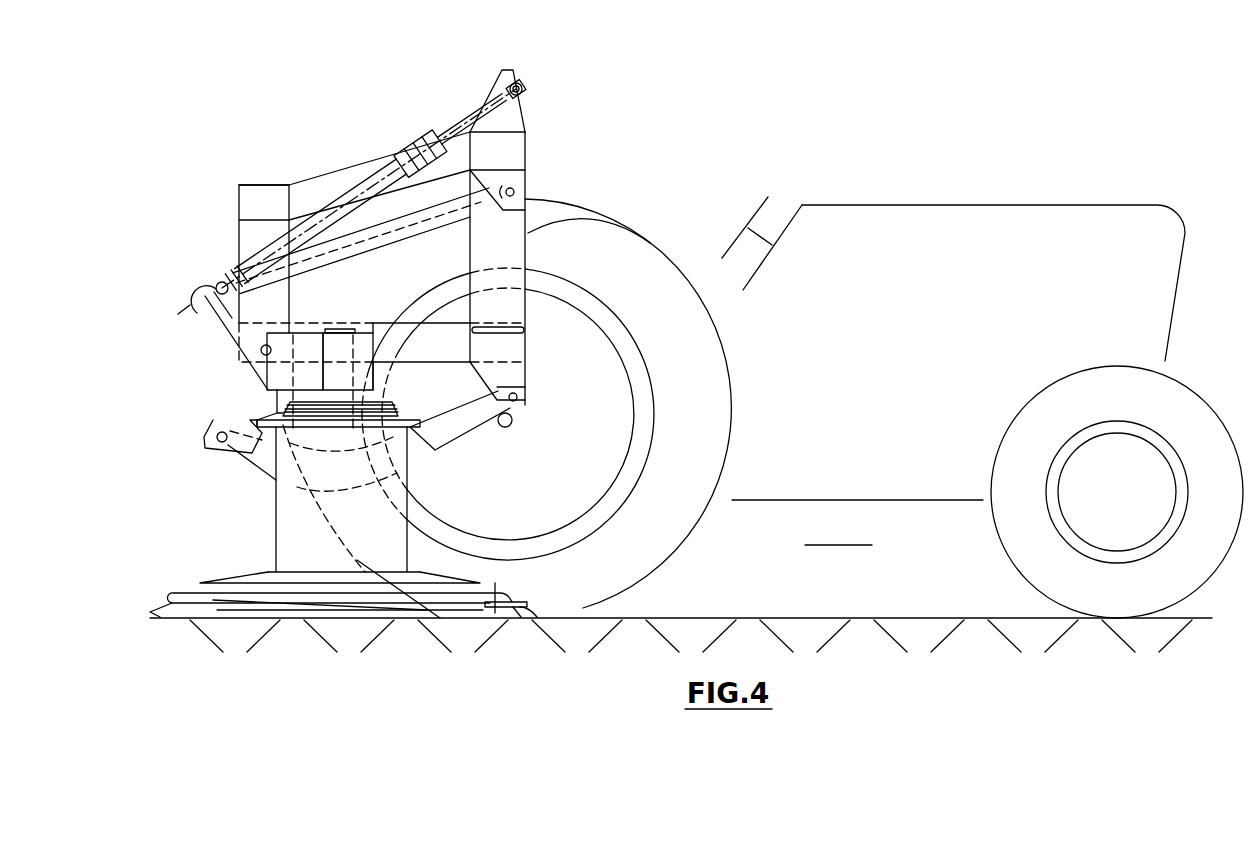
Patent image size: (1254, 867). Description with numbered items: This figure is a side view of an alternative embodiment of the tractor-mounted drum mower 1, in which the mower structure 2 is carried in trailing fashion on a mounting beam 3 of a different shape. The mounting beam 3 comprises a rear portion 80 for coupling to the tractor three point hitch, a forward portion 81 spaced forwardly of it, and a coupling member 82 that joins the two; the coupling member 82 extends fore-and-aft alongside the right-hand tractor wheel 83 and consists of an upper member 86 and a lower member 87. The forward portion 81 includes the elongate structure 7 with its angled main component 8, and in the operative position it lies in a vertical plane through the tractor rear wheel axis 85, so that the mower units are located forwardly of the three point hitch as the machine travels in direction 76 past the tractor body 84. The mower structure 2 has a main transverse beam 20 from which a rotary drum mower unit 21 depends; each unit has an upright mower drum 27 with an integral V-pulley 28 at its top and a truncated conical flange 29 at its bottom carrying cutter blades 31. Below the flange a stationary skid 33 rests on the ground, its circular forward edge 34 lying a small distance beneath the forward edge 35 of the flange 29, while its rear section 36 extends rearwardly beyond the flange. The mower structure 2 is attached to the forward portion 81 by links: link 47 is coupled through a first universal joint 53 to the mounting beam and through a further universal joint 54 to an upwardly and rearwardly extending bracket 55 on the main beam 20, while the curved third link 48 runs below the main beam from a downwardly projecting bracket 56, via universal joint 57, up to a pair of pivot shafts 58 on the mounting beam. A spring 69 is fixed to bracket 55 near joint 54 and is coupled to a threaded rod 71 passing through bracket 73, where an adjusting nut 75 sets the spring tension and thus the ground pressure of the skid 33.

The drum mower 1 is at (318, 126).
The mower structure 2 is at (258, 547).
The mounting beam 3 is at (535, 262).
The elongate structure 7 is at (546, 175).
The angled main component 8 is at (531, 312).
The main transverse beam 20 is at (273, 392).
The rotary drum mower unit 21 is at (407, 535).
The mower drum 27 is at (416, 484).
The V-pulley 28 is at (386, 407).
The truncated conical flange 29 is at (498, 586).
The cutter blade 31 is at (524, 622).
The stationary skid 33 is at (443, 624).
The forward edge of skid 34 is at (523, 622).
The forward edge of flange 35 is at (506, 594).
The rear section of skid 36 is at (160, 622).
The link 47 is at (405, 232).
The third link 48 is at (452, 437).
The first universal joint 53 is at (520, 189).
The universal joint 54 is at (216, 284).
The bracket 55 is at (232, 333).
The bracket 56 is at (214, 443).
The universal joint 57 is at (229, 445).
The pivot shafts 58 is at (520, 399).
The spring 69 is at (414, 144).
The threaded rod 71 is at (463, 124).
The bracket 73 is at (517, 74).
The adjusting nut 75 is at (526, 96).
The direction of travel 76 is at (885, 545).
The rear portion 80 is at (239, 243).
The forward portion 81 is at (528, 233).
The coupling member 82 is at (330, 178).
The right-hand tractor wheel 83 is at (678, 553).
The tractor body 84 is at (902, 205).
The tractor rear wheel axis 85 is at (512, 424).
The upper member 86 is at (294, 182).
The lower member 87 is at (437, 352).